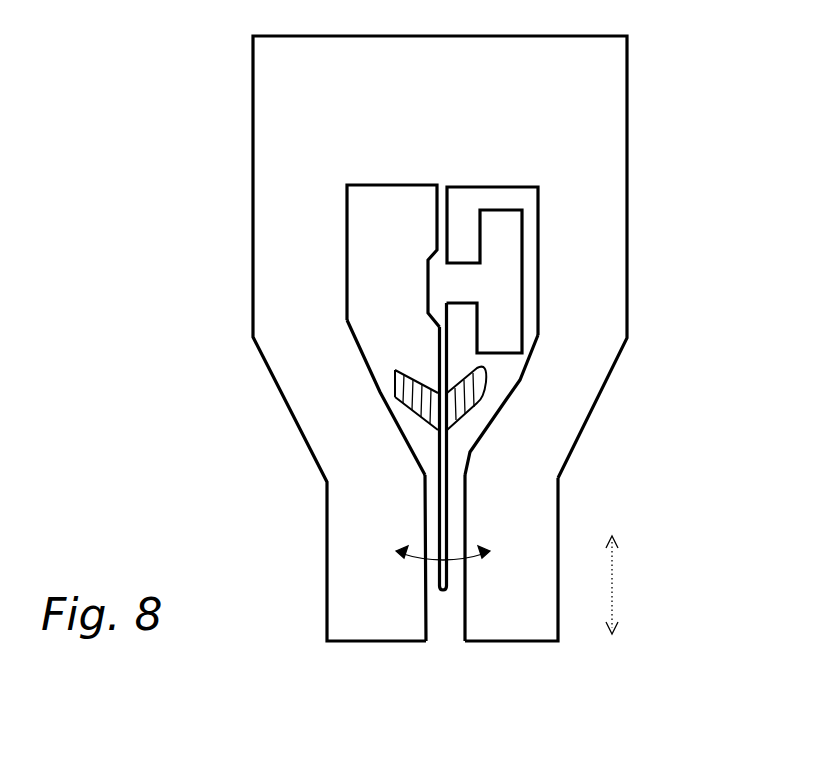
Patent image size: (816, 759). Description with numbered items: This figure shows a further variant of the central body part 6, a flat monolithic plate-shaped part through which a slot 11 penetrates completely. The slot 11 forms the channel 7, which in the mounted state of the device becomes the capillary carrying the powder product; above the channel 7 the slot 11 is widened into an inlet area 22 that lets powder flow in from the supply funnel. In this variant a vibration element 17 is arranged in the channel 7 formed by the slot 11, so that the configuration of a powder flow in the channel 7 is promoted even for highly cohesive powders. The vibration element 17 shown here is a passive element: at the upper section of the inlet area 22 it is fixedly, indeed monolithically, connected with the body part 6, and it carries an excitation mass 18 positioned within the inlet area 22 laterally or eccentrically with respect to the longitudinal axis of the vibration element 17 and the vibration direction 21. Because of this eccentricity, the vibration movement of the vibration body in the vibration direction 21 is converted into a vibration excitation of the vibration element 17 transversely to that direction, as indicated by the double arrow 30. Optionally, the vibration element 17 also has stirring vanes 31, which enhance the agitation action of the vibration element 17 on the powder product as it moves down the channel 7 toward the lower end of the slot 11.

The central body part 6 is at (276, 219).
The inlet area 22 is at (404, 242).
The excitation mass 18 is at (513, 305).
The vibration element 17 is at (439, 495).
The channel 7 is at (458, 520).
The stirring vanes 31 is at (470, 402).
The double arrow 30 is at (417, 558).
The vibration direction 21 is at (613, 590).
The slot 11 is at (459, 629).